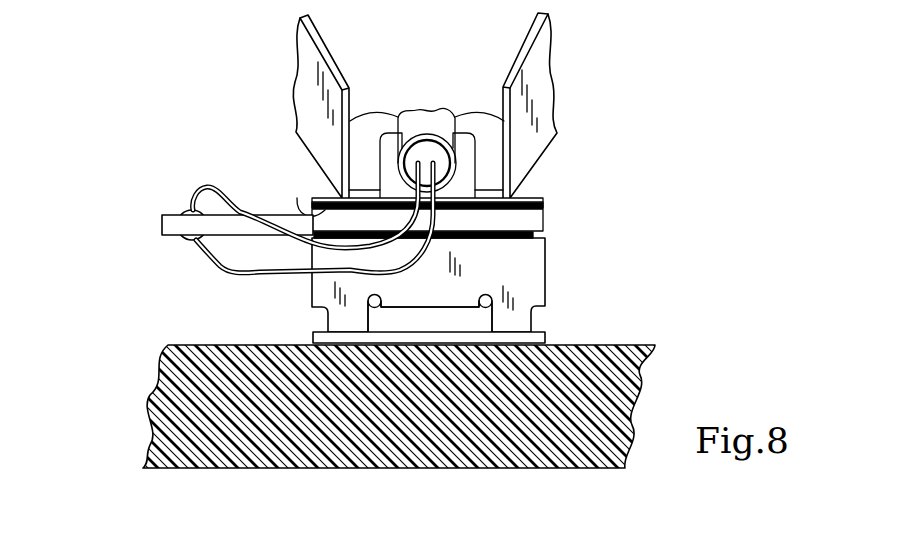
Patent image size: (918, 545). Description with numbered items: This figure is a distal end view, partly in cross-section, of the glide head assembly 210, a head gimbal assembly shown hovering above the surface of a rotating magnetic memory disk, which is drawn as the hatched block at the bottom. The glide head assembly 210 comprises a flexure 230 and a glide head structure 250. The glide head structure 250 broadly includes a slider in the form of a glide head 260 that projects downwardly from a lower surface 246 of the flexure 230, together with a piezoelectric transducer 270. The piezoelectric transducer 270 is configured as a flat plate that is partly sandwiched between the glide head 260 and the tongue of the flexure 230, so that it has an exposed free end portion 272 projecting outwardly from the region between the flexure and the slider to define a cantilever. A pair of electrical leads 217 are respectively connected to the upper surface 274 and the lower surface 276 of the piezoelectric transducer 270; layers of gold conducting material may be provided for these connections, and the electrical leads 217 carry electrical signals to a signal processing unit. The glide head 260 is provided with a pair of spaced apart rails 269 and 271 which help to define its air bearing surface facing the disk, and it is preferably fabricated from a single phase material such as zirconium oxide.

The glide head assembly 210 is at (572, 79).
The flexure 230 is at (307, 81).
The lower surface 246 is at (300, 205).
The electrical leads 217 is at (205, 186).
The glide head structure 250 is at (142, 219).
The exposed free end portion 272 is at (222, 228).
The upper surface 274 is at (530, 197).
The piezoelectric transducer 270 is at (533, 222).
The lower surface 276 is at (523, 237).
The glide head 260 is at (438, 293).
The rail 271 is at (345, 317).
The rail 269 is at (513, 317).